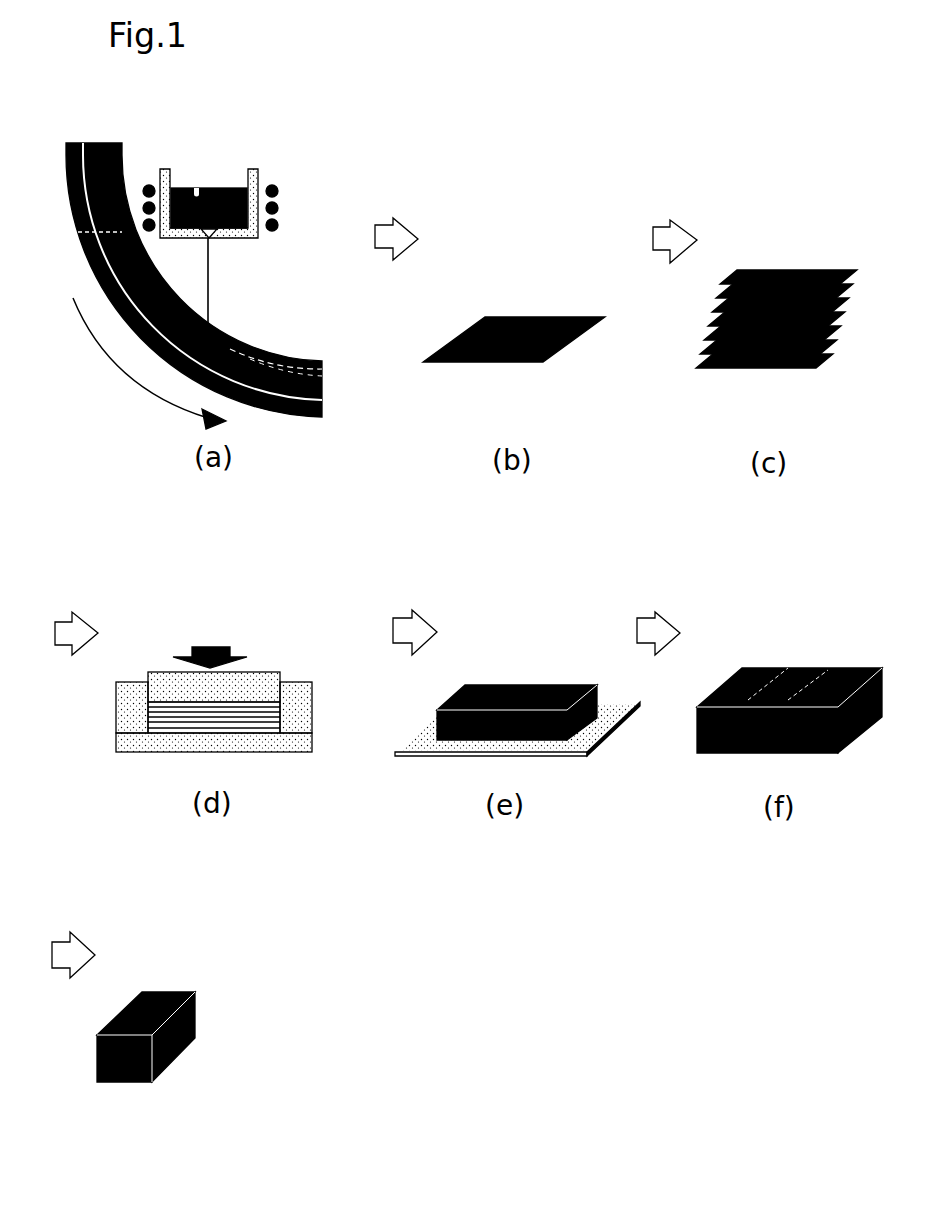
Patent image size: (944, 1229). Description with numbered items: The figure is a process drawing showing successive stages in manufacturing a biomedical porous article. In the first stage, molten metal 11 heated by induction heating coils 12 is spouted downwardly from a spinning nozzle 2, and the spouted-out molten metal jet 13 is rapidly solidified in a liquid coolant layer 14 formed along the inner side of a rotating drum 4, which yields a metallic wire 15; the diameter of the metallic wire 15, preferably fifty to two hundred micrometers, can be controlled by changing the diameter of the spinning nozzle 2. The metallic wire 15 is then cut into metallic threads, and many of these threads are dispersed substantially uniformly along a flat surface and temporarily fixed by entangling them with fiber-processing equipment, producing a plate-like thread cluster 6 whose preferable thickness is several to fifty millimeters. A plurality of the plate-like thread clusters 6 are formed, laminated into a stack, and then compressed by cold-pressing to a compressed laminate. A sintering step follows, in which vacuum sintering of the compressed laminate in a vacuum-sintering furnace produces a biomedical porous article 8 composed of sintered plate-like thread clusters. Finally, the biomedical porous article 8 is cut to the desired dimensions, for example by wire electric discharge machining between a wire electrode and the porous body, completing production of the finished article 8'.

The rotating drum 4 is at (73, 247).
The liquid coolant layer 14 is at (124, 156).
The molten metal 11 is at (197, 187).
The induction heating coils 12 is at (274, 181).
The spinning nozzle 2 is at (218, 232).
The molten metal jet 13 is at (210, 298).
The metallic wire 15 is at (300, 362).
The plate-like thread cluster 6 is at (546, 317).
The biomedical porous article 8 is at (659, 682).
The article 8' is at (156, 1005).